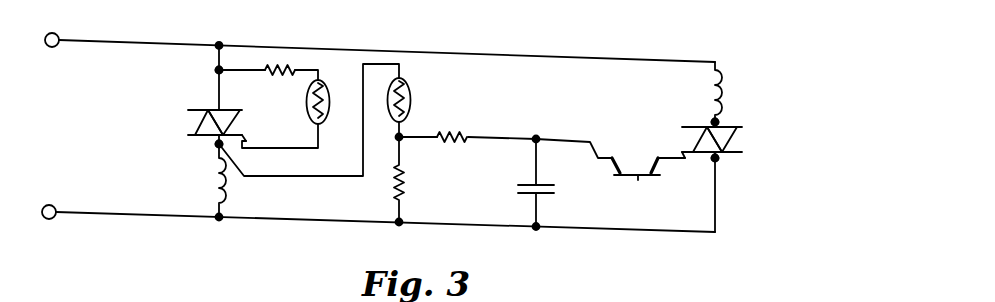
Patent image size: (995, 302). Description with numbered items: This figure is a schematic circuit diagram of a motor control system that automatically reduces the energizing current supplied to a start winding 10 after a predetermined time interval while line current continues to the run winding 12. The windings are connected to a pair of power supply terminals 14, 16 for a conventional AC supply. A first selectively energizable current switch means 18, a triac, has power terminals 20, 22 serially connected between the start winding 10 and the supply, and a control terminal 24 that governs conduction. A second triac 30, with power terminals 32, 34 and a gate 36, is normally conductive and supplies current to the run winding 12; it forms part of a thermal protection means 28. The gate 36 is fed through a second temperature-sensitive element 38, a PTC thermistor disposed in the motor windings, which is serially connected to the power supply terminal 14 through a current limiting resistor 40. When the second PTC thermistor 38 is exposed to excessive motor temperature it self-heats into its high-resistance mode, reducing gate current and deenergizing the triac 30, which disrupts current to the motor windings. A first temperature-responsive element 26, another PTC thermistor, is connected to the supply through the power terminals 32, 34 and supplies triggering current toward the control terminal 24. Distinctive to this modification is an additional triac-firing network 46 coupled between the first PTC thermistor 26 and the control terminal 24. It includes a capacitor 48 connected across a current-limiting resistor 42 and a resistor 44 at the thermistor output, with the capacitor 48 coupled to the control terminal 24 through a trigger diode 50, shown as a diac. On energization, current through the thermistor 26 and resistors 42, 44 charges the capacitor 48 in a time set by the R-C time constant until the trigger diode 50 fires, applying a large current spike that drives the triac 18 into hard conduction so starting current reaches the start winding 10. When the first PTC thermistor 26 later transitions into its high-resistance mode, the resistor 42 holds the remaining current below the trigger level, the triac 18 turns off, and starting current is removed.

The start winding 10 is at (718, 86).
The run winding 12 is at (226, 196).
The power supply terminal 14 is at (62, 33).
The power supply terminal 16 is at (56, 210).
The current switch means 18 is at (742, 135).
The power terminal 20 is at (719, 123).
The power terminal 22 is at (718, 161).
The control terminal 24 is at (682, 154).
The temperature-responsive element 26 is at (411, 99).
The thermal protection means 28 is at (285, 112).
The selectively energizable switch 30 is at (200, 120).
The power terminal 32 is at (215, 70).
The power terminal 34 is at (215, 146).
The gate 36 is at (248, 141).
The second temperature-sensitive element 38 is at (330, 88).
The current limiting resistor 40 is at (297, 70).
The current-limiting resistor 42 is at (468, 137).
The resistor 44 is at (404, 190).
The triac-firing network 46 is at (635, 184).
The capacitor 48 is at (540, 181).
The trigger diode 50 is at (638, 180).